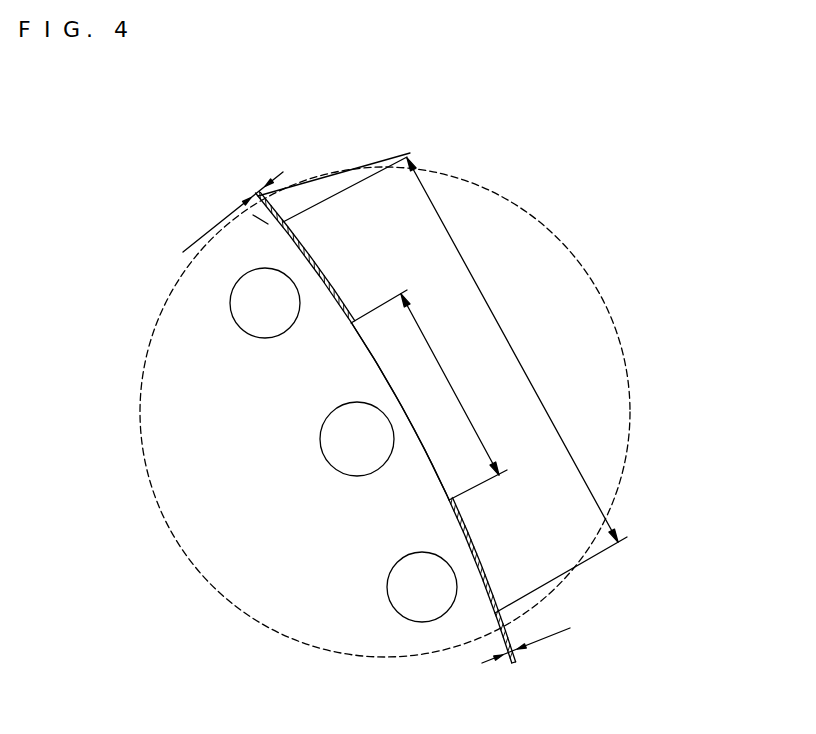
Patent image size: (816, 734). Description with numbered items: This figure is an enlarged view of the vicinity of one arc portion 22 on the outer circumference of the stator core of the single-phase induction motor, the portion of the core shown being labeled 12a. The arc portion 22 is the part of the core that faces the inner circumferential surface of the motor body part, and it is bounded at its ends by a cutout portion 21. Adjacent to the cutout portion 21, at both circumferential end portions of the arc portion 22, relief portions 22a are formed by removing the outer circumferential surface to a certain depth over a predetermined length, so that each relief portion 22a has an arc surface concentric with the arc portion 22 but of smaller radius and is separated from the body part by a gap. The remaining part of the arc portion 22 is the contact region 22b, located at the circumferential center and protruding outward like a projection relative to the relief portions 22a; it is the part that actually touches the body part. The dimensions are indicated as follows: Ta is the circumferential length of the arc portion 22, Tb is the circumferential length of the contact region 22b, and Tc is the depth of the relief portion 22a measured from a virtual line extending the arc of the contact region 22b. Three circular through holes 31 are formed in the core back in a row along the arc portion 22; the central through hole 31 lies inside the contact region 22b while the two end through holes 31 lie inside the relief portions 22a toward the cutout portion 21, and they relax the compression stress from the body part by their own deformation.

The end face of rotor core 12a is at (275, 533).
The cutout portion 21 is at (270, 202).
The arc portion 22 is at (652, 173).
The relief portion 22a is at (326, 279).
The contact region 22b is at (379, 367).
The through hole 31 is at (230, 302).
The circumferential length of the arc portion Ta is at (442, 383).
The circumferential length of the contact region Tb is at (429, 395).
The depth of the relief portion Tc is at (374, 417).